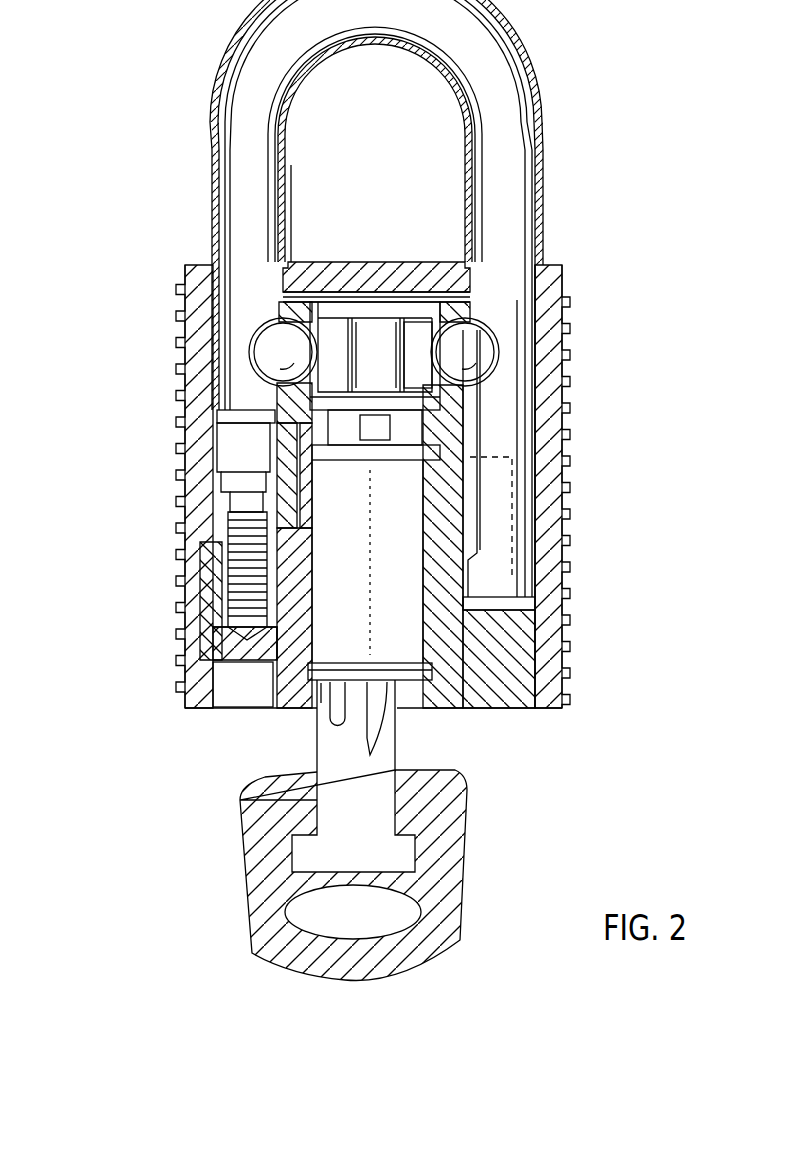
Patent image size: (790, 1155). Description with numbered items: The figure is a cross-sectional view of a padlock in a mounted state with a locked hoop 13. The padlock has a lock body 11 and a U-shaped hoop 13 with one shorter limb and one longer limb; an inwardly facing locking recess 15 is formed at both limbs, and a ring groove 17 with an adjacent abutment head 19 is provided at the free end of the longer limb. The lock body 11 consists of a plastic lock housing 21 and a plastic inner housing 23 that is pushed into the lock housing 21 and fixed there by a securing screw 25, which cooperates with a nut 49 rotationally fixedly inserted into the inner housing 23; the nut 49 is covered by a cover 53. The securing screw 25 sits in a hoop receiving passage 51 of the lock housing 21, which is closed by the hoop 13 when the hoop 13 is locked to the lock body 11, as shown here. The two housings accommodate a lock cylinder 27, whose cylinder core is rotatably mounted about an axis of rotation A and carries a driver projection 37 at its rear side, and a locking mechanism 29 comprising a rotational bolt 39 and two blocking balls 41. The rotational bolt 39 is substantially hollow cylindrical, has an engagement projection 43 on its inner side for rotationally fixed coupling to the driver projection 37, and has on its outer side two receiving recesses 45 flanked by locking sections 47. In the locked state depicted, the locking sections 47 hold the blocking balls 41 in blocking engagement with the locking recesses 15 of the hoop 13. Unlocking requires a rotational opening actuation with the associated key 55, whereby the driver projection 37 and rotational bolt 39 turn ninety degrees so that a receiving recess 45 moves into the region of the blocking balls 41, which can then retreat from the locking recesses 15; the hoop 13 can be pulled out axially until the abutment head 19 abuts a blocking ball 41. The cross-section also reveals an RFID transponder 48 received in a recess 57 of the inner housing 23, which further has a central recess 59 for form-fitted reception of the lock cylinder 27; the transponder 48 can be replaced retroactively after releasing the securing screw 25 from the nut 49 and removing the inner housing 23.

The lock body 11 is at (158, 392).
The hoop 13 is at (161, 166).
The locking recess 15 is at (260, 320).
The ring groove 17 is at (540, 545).
The abutment head 19 is at (535, 600).
The lock housing 21 is at (551, 632).
The inner housing 23 is at (512, 690).
The securing screw 25 is at (228, 522).
The lock cylinder 27 is at (390, 650).
The locking mechanism 29 is at (338, 292).
The driver projection 37 is at (380, 445).
The rotational bolt 39 is at (392, 330).
The blocking balls 41 is at (252, 353).
The engagement projection 43 is at (340, 445).
The receiving recesses 45 is at (386, 360).
The locking sections 47 is at (420, 350).
The RFID transponder 48 is at (277, 438).
The nut 49 is at (205, 642).
The hoop receiving passage 51 is at (238, 455).
The cover 53 is at (235, 690).
The key 55 is at (216, 830).
The recess 57 is at (225, 578).
The central recess 59 is at (538, 104).
The axis of rotation A is at (372, 543).